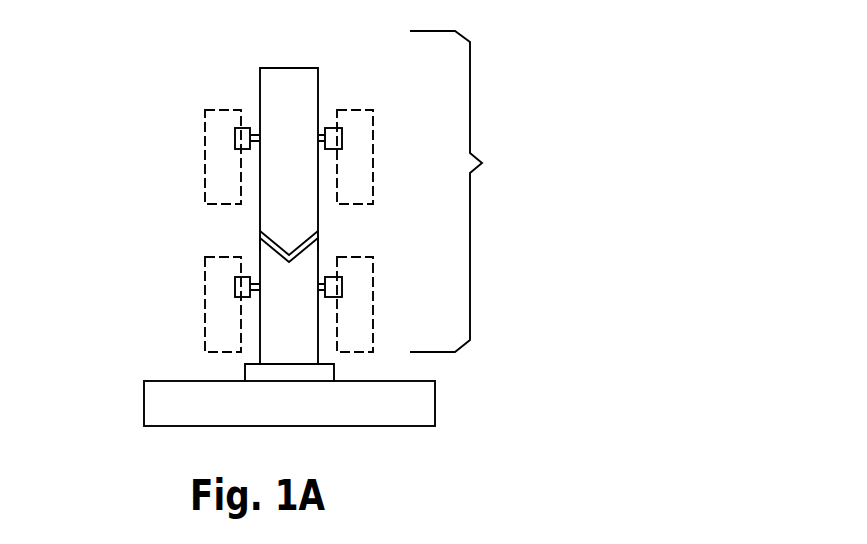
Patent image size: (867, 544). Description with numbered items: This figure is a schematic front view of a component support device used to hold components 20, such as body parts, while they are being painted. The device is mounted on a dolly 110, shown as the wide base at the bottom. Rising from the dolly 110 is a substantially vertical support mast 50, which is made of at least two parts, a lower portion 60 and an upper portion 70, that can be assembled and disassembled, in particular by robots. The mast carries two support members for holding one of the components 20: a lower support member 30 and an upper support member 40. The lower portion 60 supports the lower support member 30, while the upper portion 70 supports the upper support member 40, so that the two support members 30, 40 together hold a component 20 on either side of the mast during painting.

The component 20 is at (203, 183).
The lower support member 30 is at (233, 286).
The upper support member 40 is at (233, 137).
The support mast 50 is at (465, 191).
The lower portion 60 is at (300, 326).
The upper portion 70 is at (304, 86).
The dolly 110 is at (143, 402).